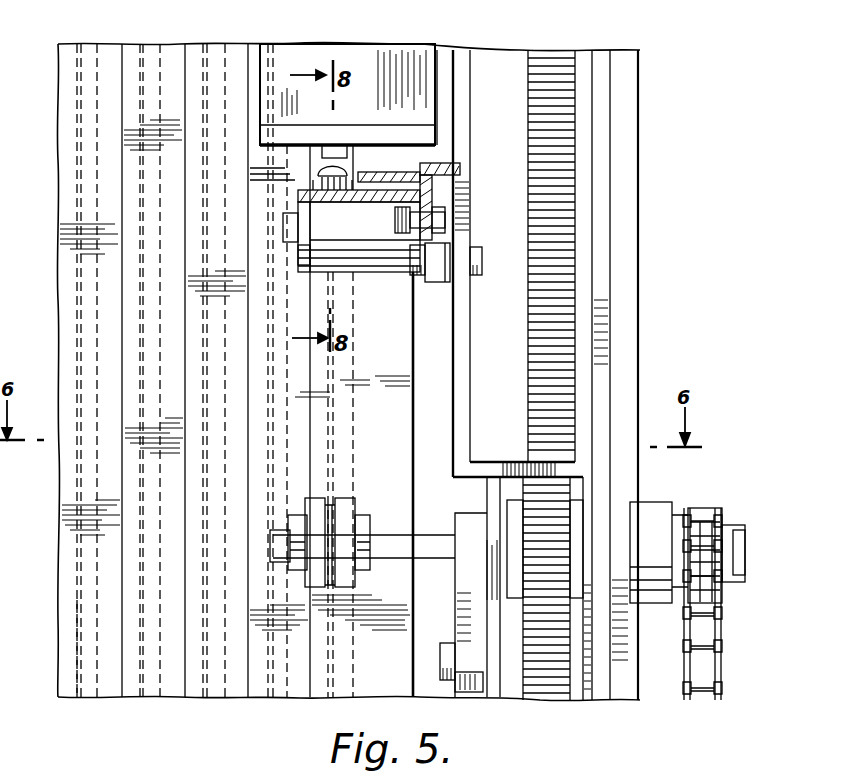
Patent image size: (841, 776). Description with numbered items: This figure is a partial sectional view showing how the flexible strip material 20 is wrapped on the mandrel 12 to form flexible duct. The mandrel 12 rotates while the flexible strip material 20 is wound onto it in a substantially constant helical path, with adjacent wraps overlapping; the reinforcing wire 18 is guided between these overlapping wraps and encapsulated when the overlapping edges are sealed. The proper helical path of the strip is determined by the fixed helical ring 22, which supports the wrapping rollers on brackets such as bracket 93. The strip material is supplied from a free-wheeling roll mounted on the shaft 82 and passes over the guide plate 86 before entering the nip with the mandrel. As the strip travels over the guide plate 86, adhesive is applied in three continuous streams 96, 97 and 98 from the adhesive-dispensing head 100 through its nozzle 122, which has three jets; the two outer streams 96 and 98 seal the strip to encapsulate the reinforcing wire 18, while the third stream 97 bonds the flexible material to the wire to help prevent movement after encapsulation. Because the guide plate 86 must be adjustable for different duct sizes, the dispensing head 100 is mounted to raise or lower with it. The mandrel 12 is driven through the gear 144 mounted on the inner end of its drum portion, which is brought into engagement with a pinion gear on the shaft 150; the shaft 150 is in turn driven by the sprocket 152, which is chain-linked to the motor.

The mandrel 12 is at (490, 63).
The reinforcing wire 18 is at (88, 700).
The flexible strip material 20 is at (362, 178).
The fixed helical ring 22 is at (465, 239).
The shaft 82 is at (493, 503).
The guide plate 86 is at (348, 207).
The bracket 93 is at (470, 662).
The adhesive stream 96 is at (300, 179).
The adhesive stream 97 is at (306, 236).
The adhesive stream 98 is at (352, 170).
The adhesive-dispensing head 100 is at (375, 75).
The nozzle 122 is at (305, 142).
The gear 144 is at (575, 212).
The shaft 150 is at (746, 584).
The sprocket 152 is at (706, 508).